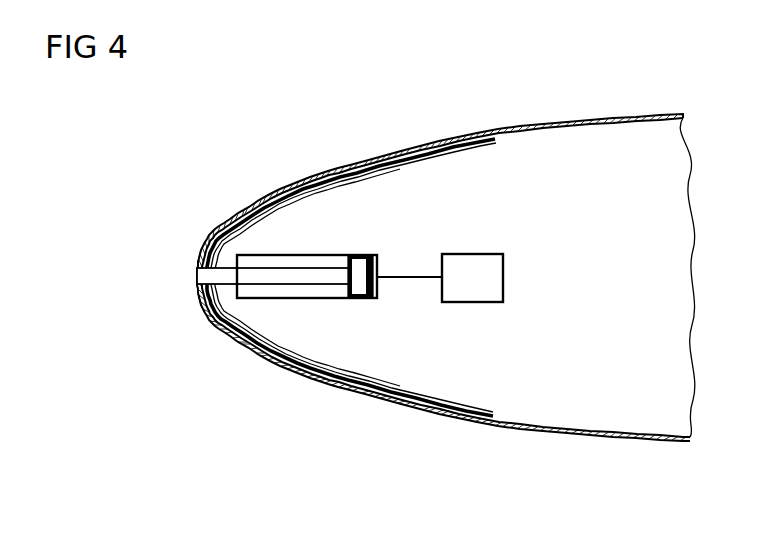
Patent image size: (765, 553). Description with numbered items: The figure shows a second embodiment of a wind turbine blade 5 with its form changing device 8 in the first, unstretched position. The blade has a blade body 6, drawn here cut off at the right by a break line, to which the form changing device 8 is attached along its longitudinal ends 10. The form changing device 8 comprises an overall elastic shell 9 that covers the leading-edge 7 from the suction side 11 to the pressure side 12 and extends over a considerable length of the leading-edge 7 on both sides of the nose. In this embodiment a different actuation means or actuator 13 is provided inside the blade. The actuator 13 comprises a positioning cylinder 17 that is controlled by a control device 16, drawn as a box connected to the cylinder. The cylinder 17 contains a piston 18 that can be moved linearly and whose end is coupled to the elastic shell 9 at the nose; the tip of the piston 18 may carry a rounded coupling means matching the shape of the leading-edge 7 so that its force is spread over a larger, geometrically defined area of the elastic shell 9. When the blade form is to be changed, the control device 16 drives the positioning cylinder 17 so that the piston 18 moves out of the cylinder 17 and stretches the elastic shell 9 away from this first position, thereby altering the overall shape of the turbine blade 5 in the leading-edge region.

The turbine blade 5 is at (408, 286).
The blade body 6 is at (443, 286).
The leading-edge 7 is at (243, 240).
The form changing device 8 is at (186, 307).
The elastic shell 9 is at (210, 247).
The longitudinal ends 10 is at (492, 124).
The suction side 11 is at (586, 110).
The pressure side 12 is at (580, 442).
The actuator 13 is at (325, 316).
The control device 16 is at (470, 253).
The positioning cylinder 17 is at (319, 290).
The piston 18 is at (273, 287).